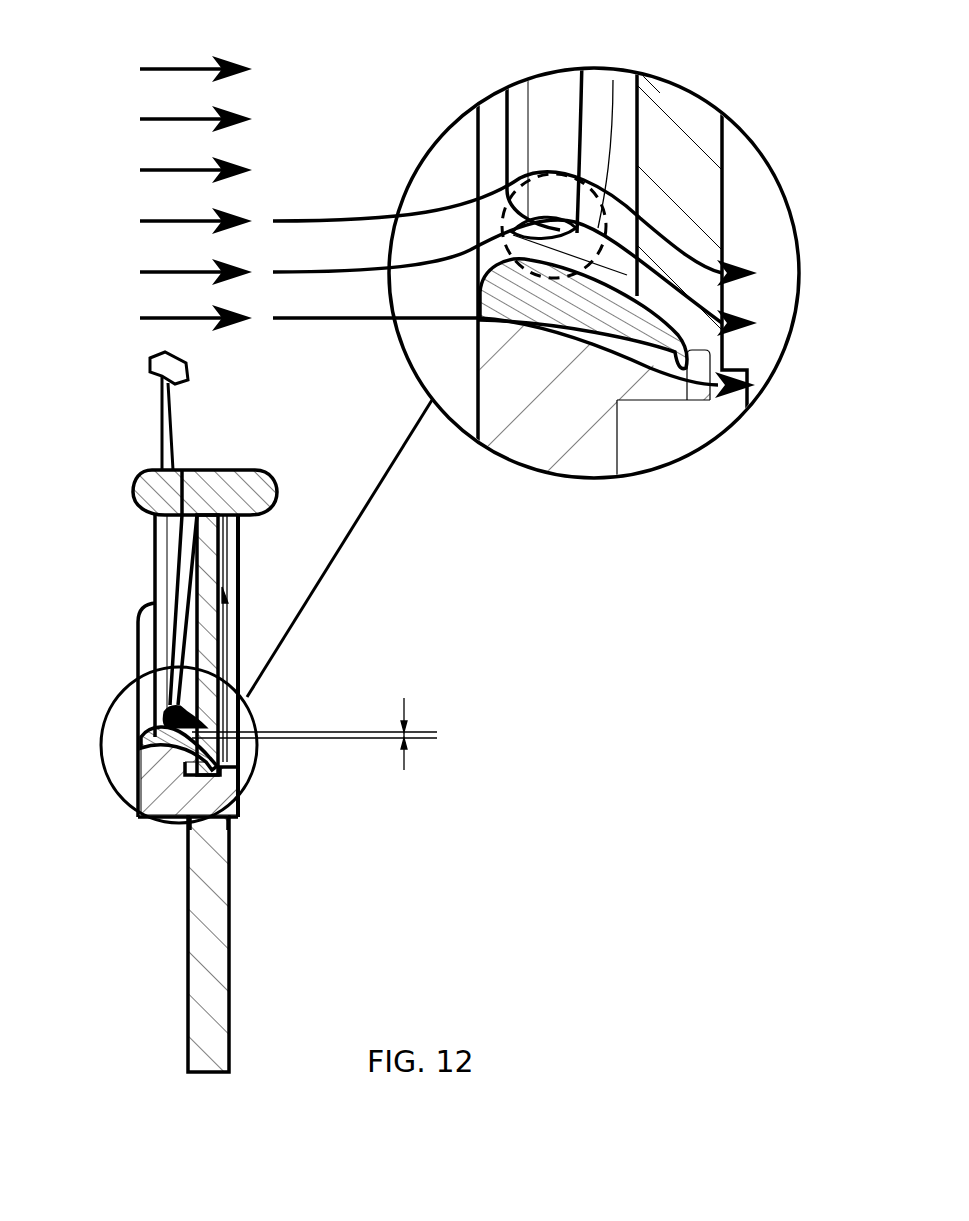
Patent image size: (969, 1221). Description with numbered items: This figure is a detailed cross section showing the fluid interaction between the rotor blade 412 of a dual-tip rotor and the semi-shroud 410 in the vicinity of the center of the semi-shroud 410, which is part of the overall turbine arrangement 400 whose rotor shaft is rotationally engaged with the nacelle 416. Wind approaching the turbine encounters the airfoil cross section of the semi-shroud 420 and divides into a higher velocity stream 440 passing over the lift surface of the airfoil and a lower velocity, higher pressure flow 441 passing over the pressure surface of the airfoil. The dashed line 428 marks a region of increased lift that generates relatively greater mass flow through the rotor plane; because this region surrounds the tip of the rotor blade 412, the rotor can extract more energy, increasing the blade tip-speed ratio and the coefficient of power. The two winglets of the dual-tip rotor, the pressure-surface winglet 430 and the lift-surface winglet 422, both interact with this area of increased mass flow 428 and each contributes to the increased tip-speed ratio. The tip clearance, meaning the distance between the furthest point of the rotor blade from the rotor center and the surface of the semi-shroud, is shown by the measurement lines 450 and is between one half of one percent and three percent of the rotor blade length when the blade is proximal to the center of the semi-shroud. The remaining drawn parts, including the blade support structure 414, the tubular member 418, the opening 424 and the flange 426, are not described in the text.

The injection device 400 is at (110, 28).
The semi-shroud 410 is at (150, 655).
The rotor blade 412 is at (168, 428).
The stem 414 is at (205, 988).
The nacelle 416 is at (200, 466).
The tube 418 is at (228, 556).
The semi-shroud 420 is at (547, 300).
The lift-surface winglet 422 is at (513, 233).
The opening 424 is at (640, 165).
The flange 426 is at (248, 817).
The region of increased lift 428 is at (610, 100).
The pressure-surface winglet 430 is at (505, 188).
The higher velocity stream 440 is at (160, 272).
The lower velocity, higher pressure flow 441 is at (173, 317).
The gap dimension 450 is at (404, 712).